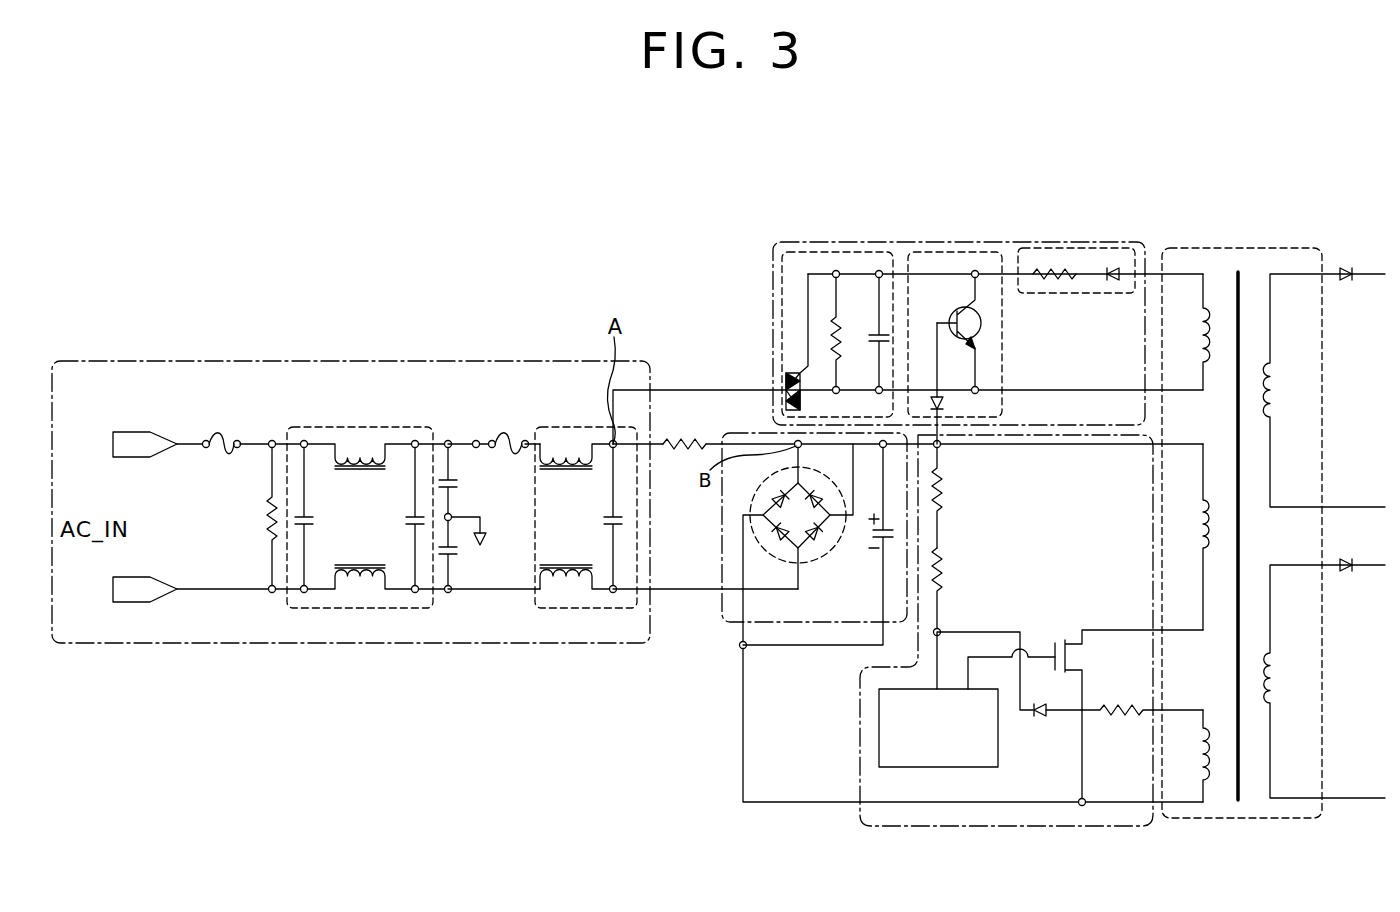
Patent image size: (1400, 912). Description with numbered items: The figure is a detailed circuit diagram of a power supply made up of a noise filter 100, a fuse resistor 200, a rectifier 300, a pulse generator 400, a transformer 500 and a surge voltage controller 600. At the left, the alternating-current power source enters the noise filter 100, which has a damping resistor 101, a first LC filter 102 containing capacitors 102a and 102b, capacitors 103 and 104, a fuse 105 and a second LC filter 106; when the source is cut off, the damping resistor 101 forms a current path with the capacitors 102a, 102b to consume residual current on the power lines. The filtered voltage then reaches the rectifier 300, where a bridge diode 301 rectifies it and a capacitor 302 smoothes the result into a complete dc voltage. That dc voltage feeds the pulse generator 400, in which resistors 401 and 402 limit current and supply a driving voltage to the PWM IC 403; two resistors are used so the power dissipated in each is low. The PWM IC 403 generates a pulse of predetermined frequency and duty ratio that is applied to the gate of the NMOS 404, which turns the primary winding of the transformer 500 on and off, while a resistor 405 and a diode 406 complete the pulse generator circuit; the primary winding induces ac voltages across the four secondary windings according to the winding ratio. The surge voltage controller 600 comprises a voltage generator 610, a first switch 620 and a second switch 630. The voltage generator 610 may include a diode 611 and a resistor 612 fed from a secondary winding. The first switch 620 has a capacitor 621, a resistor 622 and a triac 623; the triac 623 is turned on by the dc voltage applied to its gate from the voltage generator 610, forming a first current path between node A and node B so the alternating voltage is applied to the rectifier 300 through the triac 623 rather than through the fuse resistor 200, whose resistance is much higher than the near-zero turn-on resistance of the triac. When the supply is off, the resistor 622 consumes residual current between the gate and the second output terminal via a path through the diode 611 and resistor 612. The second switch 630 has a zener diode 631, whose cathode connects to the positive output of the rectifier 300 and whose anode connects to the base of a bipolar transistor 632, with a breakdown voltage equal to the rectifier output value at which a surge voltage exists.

The noise filter 100 is at (426, 361).
The damping resistor 101 is at (268, 510).
The first LC filter 102 is at (367, 491).
The capacitor 102a is at (310, 505).
The capacitor 102b is at (410, 528).
The capacitor 103 is at (456, 482).
The capacitor 104 is at (456, 556).
The fuse 105 is at (505, 438).
The second LC filter 106 is at (560, 427).
The fuse resistor 200 is at (688, 440).
The rectifier 300 is at (720, 624).
The bridge diode 301 is at (757, 548).
The capacitor 302 is at (868, 535).
The pulse generator 400 is at (1000, 827).
The resistor 401 is at (940, 488).
The resistor 402 is at (940, 576).
The PWM IC 403 is at (879, 726).
The NMOS 404 is at (1064, 641).
The resistor 405 is at (1116, 705).
The diode 406 is at (1040, 718).
The transformer 500 is at (1214, 248).
The surge voltage controller 600 is at (773, 246).
The voltage generator 610 is at (1081, 243).
The diode 611 is at (1116, 270).
The resistor 612 is at (1032, 270).
The first switch 620 is at (782, 292).
The capacitor 621 is at (878, 330).
The resistor 622 is at (836, 312).
The triac 623 is at (780, 383).
The second switch 630 is at (948, 252).
The zener diode 631 is at (945, 402).
The bipolar transistor 632 is at (982, 320).